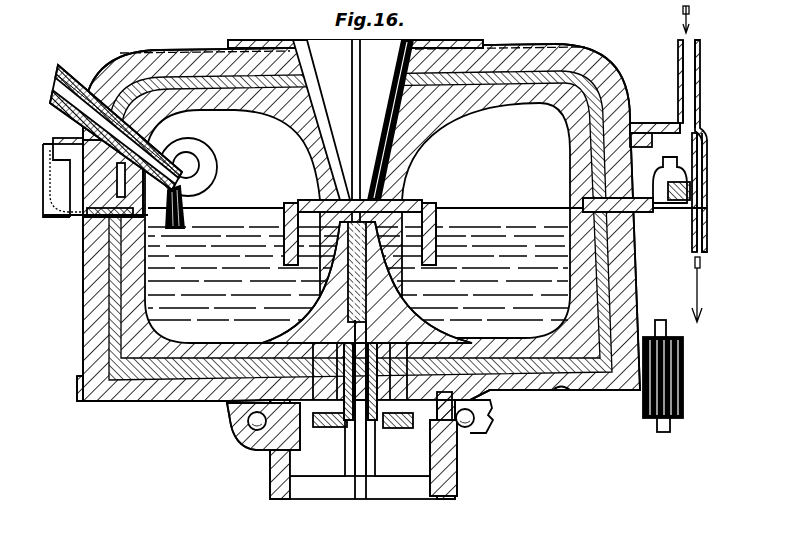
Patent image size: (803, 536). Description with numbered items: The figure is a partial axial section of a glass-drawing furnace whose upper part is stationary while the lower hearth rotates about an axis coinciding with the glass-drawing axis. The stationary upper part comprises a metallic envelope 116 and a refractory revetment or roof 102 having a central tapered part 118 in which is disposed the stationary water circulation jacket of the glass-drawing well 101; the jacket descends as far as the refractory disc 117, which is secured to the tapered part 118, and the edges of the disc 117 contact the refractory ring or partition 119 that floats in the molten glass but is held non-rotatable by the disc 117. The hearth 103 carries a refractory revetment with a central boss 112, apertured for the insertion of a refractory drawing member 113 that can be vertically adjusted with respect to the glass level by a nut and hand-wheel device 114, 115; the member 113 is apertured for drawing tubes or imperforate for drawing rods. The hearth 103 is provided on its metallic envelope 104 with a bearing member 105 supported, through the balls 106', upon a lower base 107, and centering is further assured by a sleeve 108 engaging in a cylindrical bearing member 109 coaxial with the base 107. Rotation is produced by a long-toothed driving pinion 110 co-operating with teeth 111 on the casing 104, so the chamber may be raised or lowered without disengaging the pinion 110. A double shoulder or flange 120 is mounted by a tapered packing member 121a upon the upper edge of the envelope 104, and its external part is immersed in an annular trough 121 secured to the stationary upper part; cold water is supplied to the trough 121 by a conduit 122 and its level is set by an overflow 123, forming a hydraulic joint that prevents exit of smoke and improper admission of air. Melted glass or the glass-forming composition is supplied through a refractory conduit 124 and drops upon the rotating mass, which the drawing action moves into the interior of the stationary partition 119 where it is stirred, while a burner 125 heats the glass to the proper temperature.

The glass-drawing well 101 is at (382, 158).
The roof or crown 102 is at (517, 95).
The hearth 103 is at (507, 347).
The metallic envelope 104 is at (570, 388).
The bearing member 105 is at (485, 415).
The balls 106' is at (494, 432).
The lower base 107 is at (450, 458).
The sleeve 108 is at (425, 438).
The cylindrical bearing member 109 is at (440, 478).
The long-toothed driving pinion 110 is at (688, 369).
The teeth 111 is at (77, 396).
The central boss 112 is at (374, 282).
The refractory drawing member 113 is at (362, 280).
The nut 114 is at (338, 427).
The hand-wheel 115 is at (272, 462).
The metallic envelope 116 is at (572, 50).
The refractory disc 117 is at (420, 204).
The central tapered part 118 is at (300, 150).
The refractory ring or partition 119 is at (280, 212).
The double shoulder or flange 120 is at (673, 160).
The annular trough 121 is at (700, 210).
The tapered packing member 121a is at (650, 225).
The conduit 122 is at (678, 87).
The overflow 123 is at (640, 212).
The refractory conduit 124 is at (182, 200).
The burner 125 is at (210, 166).